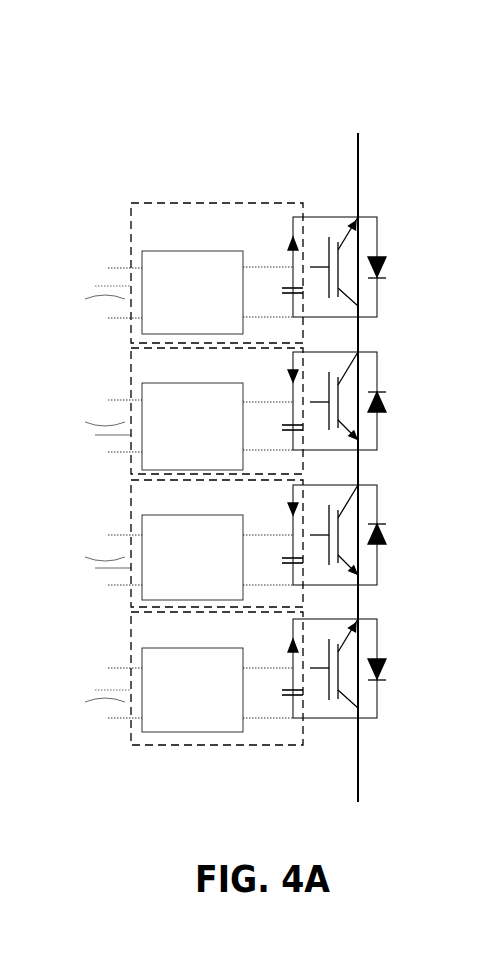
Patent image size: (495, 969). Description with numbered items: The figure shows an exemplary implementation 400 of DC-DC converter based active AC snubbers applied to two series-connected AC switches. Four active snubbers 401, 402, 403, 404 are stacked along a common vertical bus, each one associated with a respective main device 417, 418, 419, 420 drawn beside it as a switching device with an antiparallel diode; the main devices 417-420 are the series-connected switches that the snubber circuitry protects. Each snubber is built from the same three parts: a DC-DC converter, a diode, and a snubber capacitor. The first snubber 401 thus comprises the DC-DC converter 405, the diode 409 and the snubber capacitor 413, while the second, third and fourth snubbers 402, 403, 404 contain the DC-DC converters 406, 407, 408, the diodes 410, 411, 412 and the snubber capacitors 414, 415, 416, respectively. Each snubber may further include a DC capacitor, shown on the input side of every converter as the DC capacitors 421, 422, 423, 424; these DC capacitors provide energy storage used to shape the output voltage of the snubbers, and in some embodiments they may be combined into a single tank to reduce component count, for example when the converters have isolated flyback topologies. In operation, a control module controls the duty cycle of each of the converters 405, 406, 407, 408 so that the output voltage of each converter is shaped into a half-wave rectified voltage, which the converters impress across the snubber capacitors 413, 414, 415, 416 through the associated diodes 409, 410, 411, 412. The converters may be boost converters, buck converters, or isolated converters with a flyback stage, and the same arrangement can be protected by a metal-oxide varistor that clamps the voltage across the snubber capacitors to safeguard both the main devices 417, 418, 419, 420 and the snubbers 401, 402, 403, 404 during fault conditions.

The implementation of DC-DC converter based active AC snubbers 400 is at (218, 110).
The active snubber 401 is at (131, 203).
The active snubber 402 is at (131, 360).
The active snubber 403 is at (131, 498).
The active snubber 404 is at (131, 623).
The DC-DC converter 405 is at (208, 327).
The DC-DC converter 406 is at (208, 461).
The DC-DC converter 407 is at (208, 594).
The DC-DC converter 408 is at (208, 726).
The diode 409 is at (287, 242).
The diode 410 is at (287, 376).
The diode 411 is at (287, 509).
The diode 412 is at (287, 645).
The snubber capacitor 413 is at (297, 294).
The snubber capacitor 414 is at (297, 431).
The snubber capacitor 415 is at (297, 564).
The snubber capacitor 416 is at (297, 696).
The main device 417 is at (377, 218).
The main device 418 is at (377, 353).
The main device 419 is at (377, 486).
The main device 420 is at (377, 620).
The DC capacitor 421 is at (95, 286).
The DC capacitor 422 is at (95, 422).
The DC capacitor 423 is at (95, 557).
The DC capacitor 424 is at (95, 690).